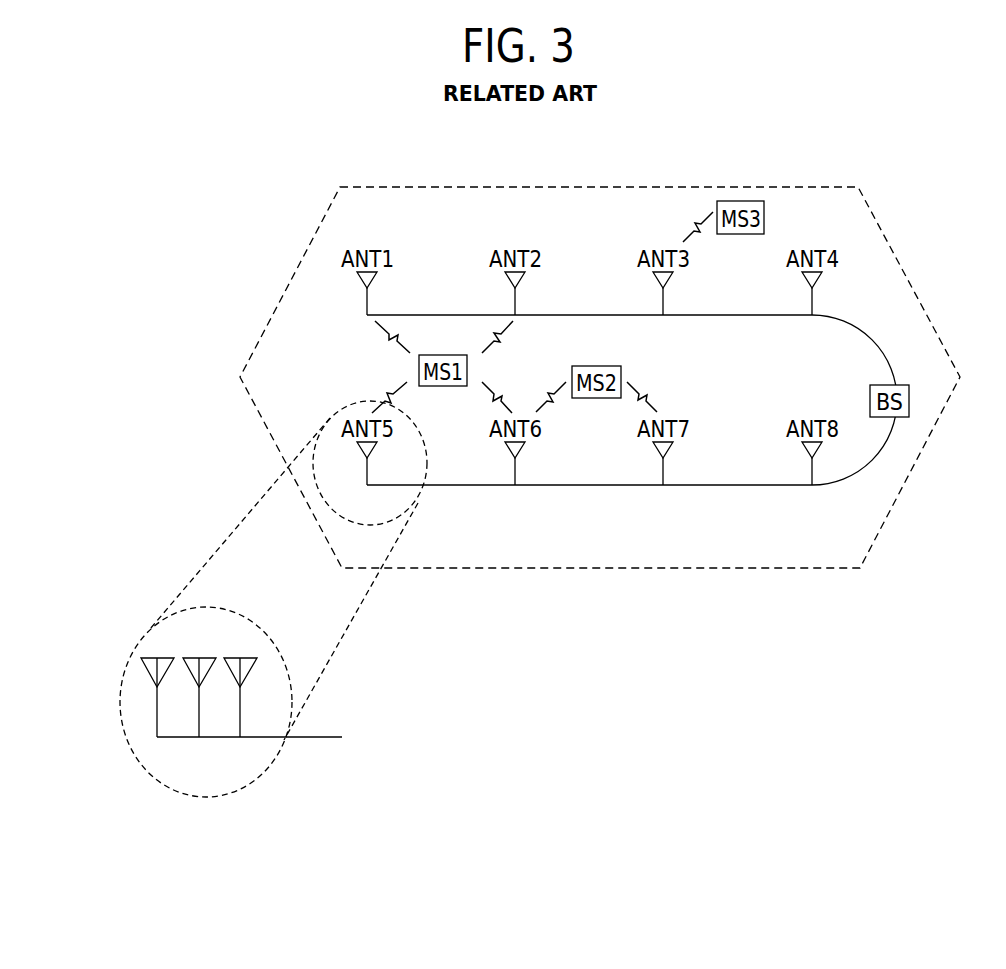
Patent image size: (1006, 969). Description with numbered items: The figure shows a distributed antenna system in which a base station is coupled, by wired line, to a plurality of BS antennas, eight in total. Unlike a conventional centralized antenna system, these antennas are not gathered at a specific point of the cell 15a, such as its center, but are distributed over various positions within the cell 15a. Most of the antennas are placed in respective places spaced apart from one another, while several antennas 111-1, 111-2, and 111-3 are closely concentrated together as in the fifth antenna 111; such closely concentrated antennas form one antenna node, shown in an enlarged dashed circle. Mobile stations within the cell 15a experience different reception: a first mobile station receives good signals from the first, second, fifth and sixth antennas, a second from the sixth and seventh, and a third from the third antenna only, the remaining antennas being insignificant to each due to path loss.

The cell 15a is at (666, 187).
The antenna 5 111 is at (344, 406).
The antenna 111-1 is at (151, 657).
The antenna 111-2 is at (203, 657).
The antenna 111-3 is at (248, 657).